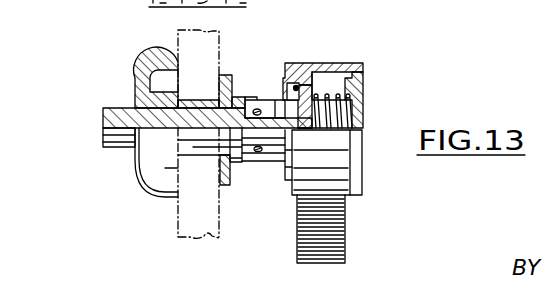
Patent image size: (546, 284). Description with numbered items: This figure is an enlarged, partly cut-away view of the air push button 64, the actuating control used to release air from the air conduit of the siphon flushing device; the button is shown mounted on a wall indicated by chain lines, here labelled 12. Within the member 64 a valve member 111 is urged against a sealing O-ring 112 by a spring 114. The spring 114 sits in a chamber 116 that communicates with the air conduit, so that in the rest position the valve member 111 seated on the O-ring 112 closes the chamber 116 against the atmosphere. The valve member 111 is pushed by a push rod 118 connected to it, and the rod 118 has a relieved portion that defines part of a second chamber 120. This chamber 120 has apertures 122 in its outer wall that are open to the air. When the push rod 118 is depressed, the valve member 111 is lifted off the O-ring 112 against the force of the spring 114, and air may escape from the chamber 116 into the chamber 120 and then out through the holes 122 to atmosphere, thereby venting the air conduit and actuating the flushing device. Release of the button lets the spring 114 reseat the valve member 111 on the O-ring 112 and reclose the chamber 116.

The pole 12 is at (196, 239).
The air push button 64 is at (347, 131).
The valve member 111 is at (331, 77).
The sealing O-ring 112 is at (300, 86).
The spring 114 is at (332, 90).
The chamber 116 is at (339, 75).
The push rod 118 is at (107, 108).
The chamber 120 is at (271, 109).
The apertures 122 is at (258, 154).